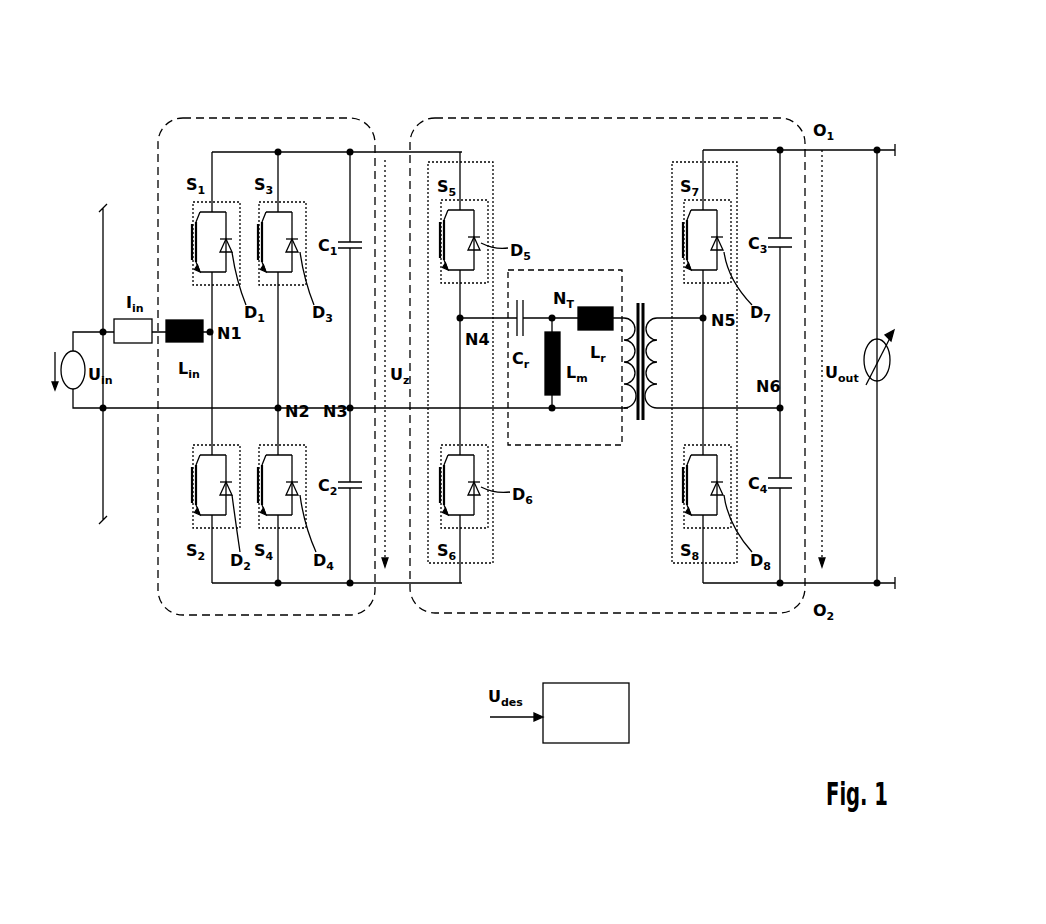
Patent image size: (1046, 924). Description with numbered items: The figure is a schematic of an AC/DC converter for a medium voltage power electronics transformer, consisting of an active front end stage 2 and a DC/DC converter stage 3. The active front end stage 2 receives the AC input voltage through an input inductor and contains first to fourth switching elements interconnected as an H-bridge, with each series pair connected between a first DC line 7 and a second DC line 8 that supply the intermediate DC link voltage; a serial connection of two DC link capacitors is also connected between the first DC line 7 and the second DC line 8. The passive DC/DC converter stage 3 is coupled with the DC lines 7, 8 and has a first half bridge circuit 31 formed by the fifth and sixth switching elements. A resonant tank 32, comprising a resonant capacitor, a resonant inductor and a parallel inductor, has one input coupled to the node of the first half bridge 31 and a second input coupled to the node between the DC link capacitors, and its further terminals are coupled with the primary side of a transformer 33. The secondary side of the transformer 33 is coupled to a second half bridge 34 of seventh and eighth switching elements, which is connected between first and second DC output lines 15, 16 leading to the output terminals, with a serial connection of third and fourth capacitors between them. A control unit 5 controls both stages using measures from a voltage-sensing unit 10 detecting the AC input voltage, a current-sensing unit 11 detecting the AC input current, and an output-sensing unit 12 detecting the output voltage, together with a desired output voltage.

The active front end stage 2 is at (260, 618).
The DC/DC converter stage 3 is at (690, 614).
The control unit 5 is at (629, 713).
The first DC line 7 is at (313, 150).
The second DC line 8 is at (313, 585).
The voltage-sensing unit 10 is at (69, 353).
The current-sensing unit 11 is at (118, 318).
The output-sensing unit 12 is at (871, 340).
The first DC output line 15 is at (757, 118).
The second DC output line 16 is at (757, 614).
The first half bridge circuit 31 is at (472, 162).
The resonant tank 32 is at (580, 270).
The transformer 33 is at (644, 303).
The second half bridge 34 is at (685, 162).